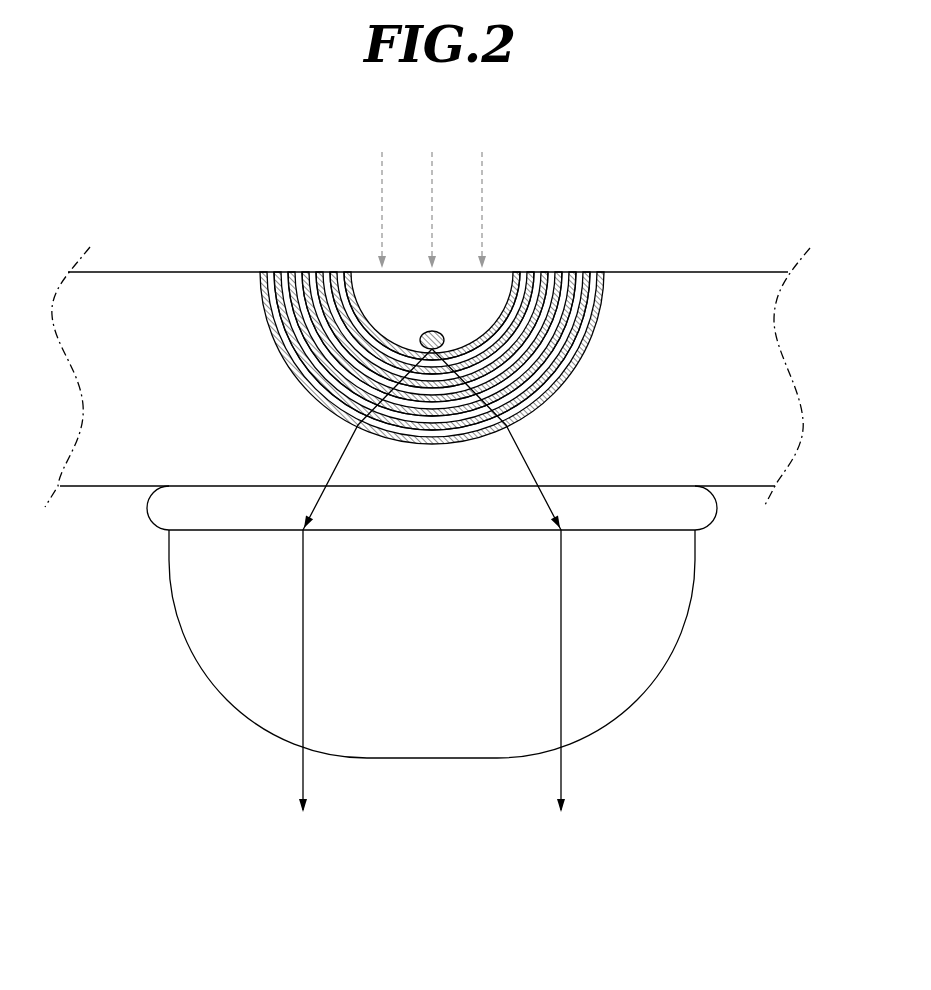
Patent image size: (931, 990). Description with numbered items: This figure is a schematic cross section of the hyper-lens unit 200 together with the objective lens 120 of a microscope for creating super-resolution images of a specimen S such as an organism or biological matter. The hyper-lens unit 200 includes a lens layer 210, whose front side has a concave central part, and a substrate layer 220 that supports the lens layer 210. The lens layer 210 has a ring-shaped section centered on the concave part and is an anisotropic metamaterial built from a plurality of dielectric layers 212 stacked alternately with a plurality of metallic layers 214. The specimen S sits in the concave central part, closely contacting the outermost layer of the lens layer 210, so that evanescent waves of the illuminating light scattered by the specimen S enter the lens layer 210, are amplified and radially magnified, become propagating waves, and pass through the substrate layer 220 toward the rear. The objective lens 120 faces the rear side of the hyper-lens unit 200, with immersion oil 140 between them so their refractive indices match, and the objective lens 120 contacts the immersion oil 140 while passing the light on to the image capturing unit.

The hyper-lens unit 200 is at (624, 244).
The substrate layer 220 is at (683, 278).
The lens layer 210 is at (426, 307).
The dielectric layers 212 is at (432, 323).
The metallic layers 214 is at (295, 272).
The specimen S is at (441, 332).
The immersion oil 140 is at (703, 514).
The objective lens 120 is at (674, 622).